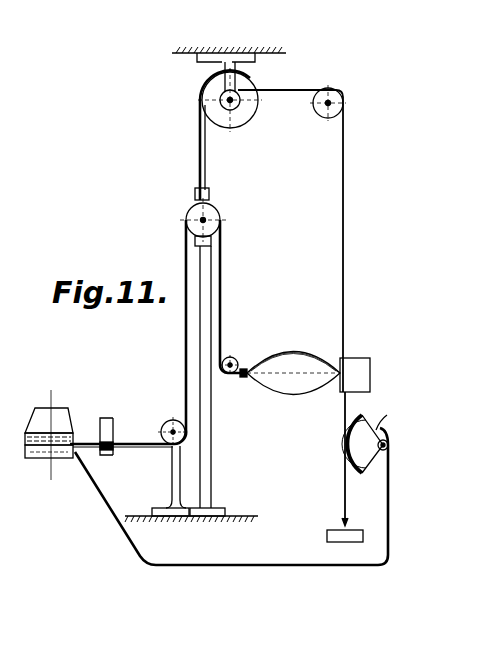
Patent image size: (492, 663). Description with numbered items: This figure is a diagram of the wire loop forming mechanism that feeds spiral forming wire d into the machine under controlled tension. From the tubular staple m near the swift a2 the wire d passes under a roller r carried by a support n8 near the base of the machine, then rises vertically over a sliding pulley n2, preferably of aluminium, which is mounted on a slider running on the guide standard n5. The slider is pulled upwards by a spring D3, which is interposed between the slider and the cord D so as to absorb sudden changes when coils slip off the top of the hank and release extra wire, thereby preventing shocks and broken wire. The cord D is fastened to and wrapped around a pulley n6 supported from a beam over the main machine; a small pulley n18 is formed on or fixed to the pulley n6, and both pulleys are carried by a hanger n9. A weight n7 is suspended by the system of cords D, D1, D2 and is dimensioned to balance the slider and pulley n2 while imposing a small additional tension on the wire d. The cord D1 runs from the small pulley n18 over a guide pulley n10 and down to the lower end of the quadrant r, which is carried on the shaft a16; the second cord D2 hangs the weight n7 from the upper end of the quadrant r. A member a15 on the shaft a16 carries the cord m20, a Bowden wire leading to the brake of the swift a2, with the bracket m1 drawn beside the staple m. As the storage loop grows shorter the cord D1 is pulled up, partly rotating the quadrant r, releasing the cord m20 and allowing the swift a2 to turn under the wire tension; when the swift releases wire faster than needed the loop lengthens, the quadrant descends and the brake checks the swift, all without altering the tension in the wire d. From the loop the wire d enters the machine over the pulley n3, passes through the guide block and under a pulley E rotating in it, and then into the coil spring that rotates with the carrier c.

The hanger n9 is at (248, 64).
The pulley n6 is at (247, 122).
The small pulley n18 is at (240, 104).
The guide pulley n10 is at (345, 100).
The cord D1 is at (343, 166).
The cord D is at (205, 168).
The spring D3 is at (195, 194).
The sliding pulley n2 is at (214, 216).
The guide standard n5 is at (211, 270).
The wire d is at (186, 350).
The pulley n3 is at (228, 375).
The pulley E is at (247, 368).
The carrier c is at (305, 350).
The swift a2 is at (62, 412).
The tubular staple m is at (113, 416).
The bracket part m1 is at (103, 425).
The quadrant r is at (168, 421).
The support n8 is at (172, 478).
The cord m20 is at (389, 492).
The shaft a16 is at (388, 444).
The member a15 is at (372, 418).
The second cord D2 is at (345, 496).
The weight n7 is at (327, 537).